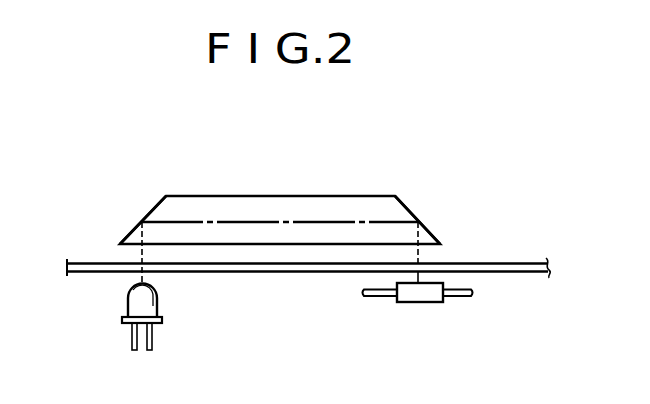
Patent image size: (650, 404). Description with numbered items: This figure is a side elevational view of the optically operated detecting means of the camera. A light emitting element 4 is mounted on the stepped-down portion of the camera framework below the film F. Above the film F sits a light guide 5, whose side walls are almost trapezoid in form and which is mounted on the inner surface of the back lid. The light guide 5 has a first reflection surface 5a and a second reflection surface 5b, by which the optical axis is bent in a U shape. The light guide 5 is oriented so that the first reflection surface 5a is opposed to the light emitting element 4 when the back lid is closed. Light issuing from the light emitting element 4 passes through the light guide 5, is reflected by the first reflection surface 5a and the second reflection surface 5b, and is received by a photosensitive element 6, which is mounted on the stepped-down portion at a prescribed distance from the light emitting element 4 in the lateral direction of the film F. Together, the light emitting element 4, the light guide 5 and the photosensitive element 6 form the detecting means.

The light emitting element 4 is at (128, 302).
The light guide 5 is at (367, 196).
The first reflection surface 5a is at (144, 218).
The second reflection surface 5b is at (417, 220).
The photosensitive element 6 is at (420, 303).
The film F is at (520, 263).